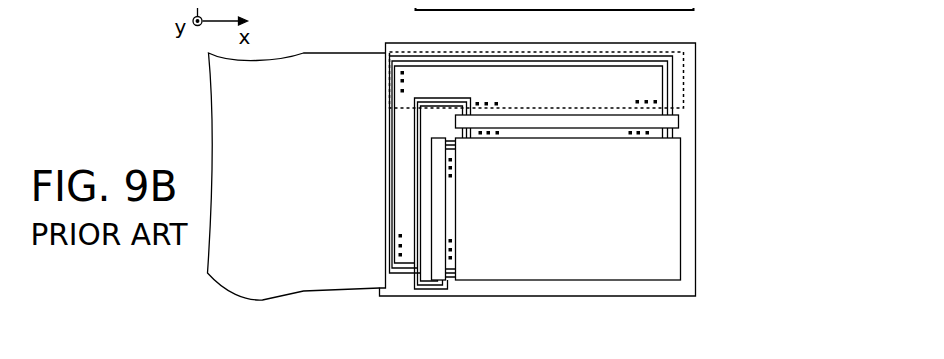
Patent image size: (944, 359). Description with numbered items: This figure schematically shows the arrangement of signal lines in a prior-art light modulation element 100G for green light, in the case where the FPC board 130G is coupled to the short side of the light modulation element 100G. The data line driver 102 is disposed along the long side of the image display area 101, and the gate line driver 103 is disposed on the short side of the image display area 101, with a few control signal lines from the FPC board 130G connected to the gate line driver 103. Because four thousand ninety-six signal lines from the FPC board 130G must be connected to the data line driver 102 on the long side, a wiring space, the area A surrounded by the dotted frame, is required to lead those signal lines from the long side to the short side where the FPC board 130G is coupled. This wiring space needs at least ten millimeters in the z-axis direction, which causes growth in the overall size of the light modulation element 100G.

The FPC board 130G is at (303, 294).
The light modulation element 100G is at (695, 222).
The area surrounded by the dotted frame A is at (683, 86).
The data line driver 102 is at (668, 124).
The image display area 101 is at (618, 268).
The gate line driver 103 is at (440, 268).